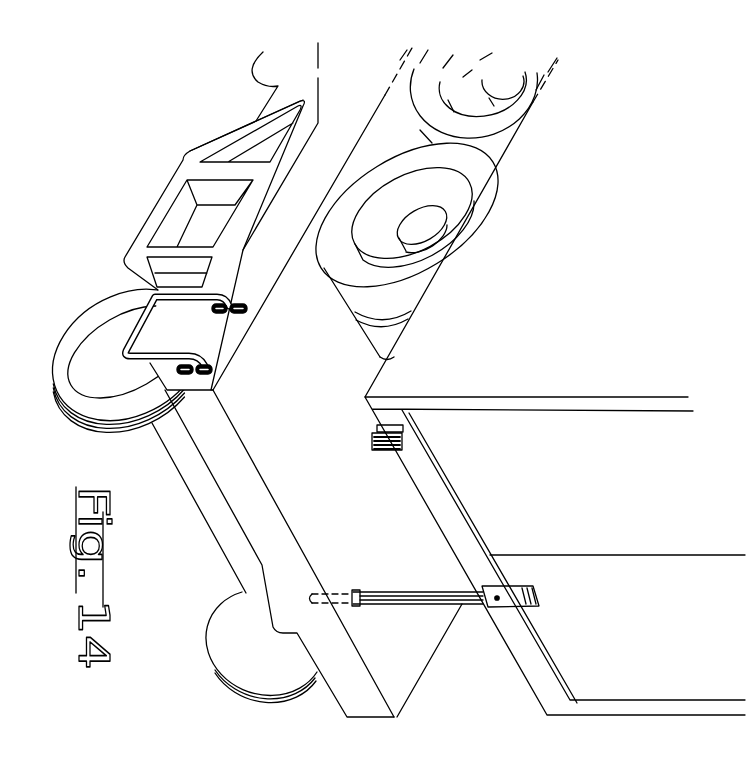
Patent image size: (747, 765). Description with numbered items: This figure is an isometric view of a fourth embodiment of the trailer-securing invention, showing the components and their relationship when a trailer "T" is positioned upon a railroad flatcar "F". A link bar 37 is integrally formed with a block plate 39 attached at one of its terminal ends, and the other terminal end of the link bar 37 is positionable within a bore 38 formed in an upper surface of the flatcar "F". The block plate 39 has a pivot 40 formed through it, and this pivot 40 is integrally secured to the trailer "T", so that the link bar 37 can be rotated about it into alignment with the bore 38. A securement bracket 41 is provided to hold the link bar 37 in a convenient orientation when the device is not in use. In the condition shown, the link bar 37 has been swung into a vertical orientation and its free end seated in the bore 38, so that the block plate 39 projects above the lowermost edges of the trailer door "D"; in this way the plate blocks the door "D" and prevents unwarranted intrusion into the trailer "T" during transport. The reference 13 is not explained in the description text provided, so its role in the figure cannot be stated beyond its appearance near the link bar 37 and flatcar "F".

The support arm 13 is at (466, 637).
The link bar 37 is at (425, 606).
The bore 38 is at (360, 607).
The block plate 39 is at (520, 610).
The pivot 40 is at (498, 604).
The securement bracket 41 is at (380, 452).
The railroad flatcar F is at (229, 430).
The trailer T is at (553, 403).
The door D is at (662, 624).